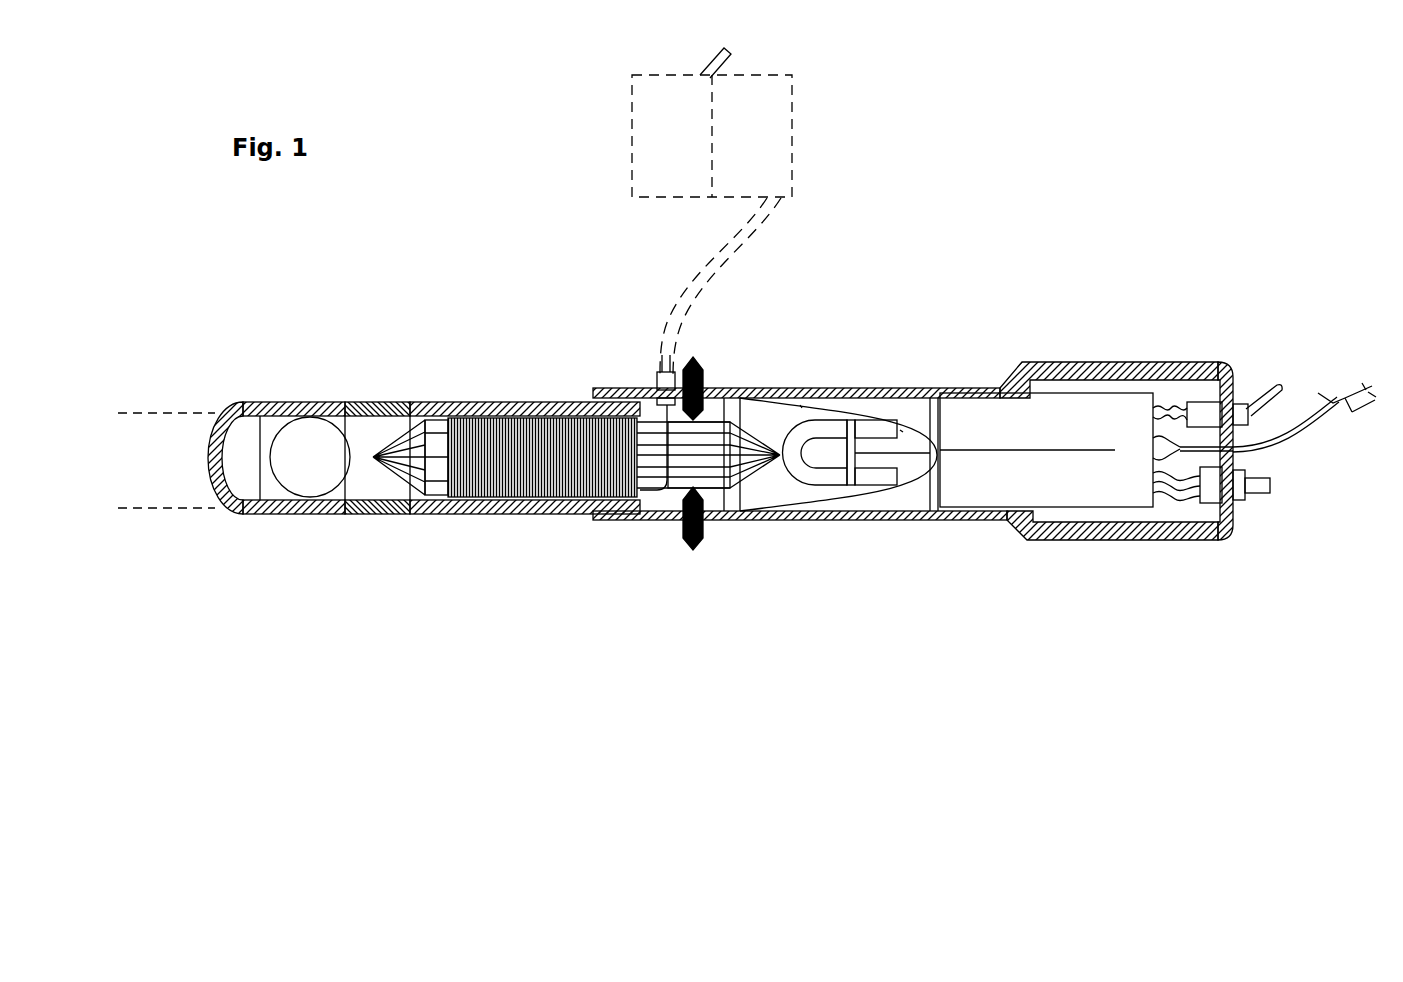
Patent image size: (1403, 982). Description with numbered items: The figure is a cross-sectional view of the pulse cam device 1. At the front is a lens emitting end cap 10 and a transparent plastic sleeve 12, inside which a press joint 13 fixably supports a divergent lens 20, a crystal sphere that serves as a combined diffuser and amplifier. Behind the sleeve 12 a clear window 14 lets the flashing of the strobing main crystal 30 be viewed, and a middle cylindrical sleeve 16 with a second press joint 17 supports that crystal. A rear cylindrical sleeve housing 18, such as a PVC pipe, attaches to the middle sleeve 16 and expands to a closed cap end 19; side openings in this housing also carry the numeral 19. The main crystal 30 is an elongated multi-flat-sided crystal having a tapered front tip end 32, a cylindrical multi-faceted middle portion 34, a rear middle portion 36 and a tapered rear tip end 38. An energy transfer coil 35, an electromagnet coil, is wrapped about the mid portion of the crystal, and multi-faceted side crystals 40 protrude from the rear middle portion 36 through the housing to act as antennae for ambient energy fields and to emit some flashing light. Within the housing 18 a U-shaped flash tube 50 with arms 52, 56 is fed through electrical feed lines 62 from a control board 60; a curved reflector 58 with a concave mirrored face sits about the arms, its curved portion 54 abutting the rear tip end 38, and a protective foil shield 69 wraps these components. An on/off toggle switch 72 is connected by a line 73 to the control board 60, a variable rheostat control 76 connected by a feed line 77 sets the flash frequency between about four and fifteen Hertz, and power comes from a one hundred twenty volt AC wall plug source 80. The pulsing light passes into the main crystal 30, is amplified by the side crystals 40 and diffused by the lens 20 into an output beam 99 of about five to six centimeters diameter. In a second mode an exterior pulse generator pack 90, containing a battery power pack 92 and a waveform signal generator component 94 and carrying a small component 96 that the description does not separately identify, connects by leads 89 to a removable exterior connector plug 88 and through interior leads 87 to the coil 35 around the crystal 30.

The pulse cam device 1 is at (1024, 238).
The lens emitting end cap 10 is at (414, 431).
The sleeve 12 is at (285, 439).
The press joint 13 is at (266, 455).
The clear window 14 is at (377, 398).
The middle cylindrical sleeve 16 is at (503, 463).
The second press joint 17 is at (542, 502).
The rear cylindrical sleeve housing 18 is at (838, 405).
The closed cap end 19 is at (865, 410).
The divergent lens 20 is at (300, 519).
The main crystal 30 is at (420, 522).
The front tip end 32 is at (437, 371).
The middle portion 34 is at (437, 396).
The energy transfer coil 35 is at (533, 394).
The rear middle portion 36 is at (660, 507).
The rear tip end 38 is at (782, 506).
The side crystals 40 is at (733, 442).
The U-shaped flash tube 50 is at (885, 483).
The arm of flash tube 52 is at (882, 421).
The curved portion 54 is at (819, 355).
The arm of flash tube 56 is at (921, 531).
The curved reflector 58 is at (970, 395).
The control board 60 is at (1080, 515).
The electrical feed line 62 is at (892, 366).
The protective material 69 is at (1116, 495).
The on/off toggle switch 72 is at (1262, 382).
The line 73 is at (1216, 380).
The variable control 76 is at (1263, 510).
The feed line 77 is at (1210, 533).
The power supply 80 is at (1304, 433).
The interior leads 87 is at (606, 405).
The removable exterior connector plug 88 is at (707, 355).
The leads 89 is at (739, 287).
The exterior pulse generator pack 90 is at (753, 103).
The battery power pack 92 is at (667, 127).
The waveform signal generator component 94 is at (749, 127).
The antenna 96 is at (683, 52).
The output beam 99 is at (171, 420).